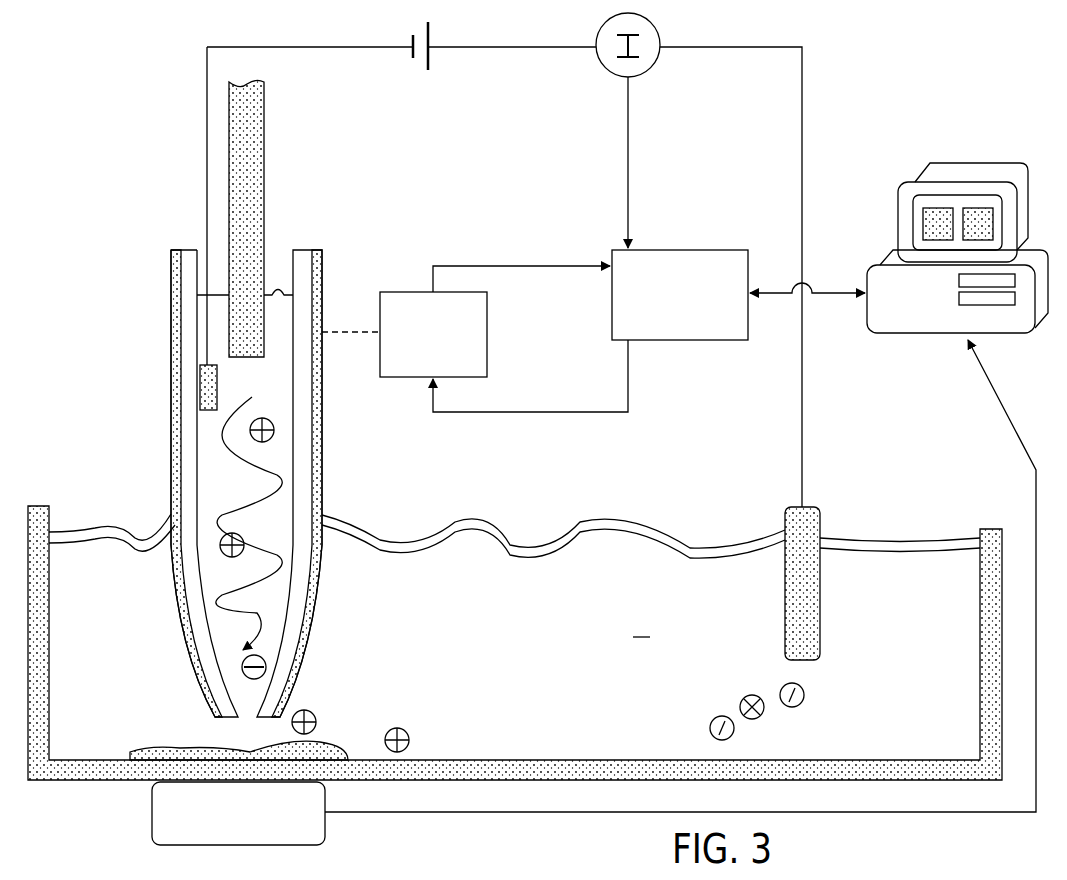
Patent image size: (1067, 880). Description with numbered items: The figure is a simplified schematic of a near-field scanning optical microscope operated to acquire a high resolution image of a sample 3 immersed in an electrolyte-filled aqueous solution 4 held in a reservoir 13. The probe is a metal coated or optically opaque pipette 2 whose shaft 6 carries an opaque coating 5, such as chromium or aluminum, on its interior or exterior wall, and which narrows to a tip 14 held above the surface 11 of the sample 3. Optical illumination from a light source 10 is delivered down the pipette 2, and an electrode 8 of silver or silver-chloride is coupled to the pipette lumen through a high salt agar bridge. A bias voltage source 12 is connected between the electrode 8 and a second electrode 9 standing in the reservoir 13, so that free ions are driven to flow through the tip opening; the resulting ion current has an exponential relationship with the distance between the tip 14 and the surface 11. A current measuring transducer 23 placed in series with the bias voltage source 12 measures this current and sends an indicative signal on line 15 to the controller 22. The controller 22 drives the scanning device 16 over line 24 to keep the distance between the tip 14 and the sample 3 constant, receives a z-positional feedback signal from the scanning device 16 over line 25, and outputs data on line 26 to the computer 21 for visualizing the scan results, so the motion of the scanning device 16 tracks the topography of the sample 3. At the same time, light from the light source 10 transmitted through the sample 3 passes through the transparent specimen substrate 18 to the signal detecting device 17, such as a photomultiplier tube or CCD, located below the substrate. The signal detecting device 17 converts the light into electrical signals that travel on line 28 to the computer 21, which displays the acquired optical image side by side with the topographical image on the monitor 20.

The pipette 2 is at (171, 380).
The sample 3 is at (146, 748).
The aqueous solution 4 is at (514, 633).
The opaque coating 5 is at (171, 464).
The shaft 6 is at (290, 270).
The electrode 8 is at (218, 396).
The second electrode 9 is at (821, 605).
The light source 10 is at (265, 198).
The surface 11 is at (322, 742).
The bias voltage source 12 is at (430, 32).
The reservoir 13 is at (990, 528).
The tip 14 is at (247, 730).
The line 15 is at (630, 152).
The scanning device 16 is at (405, 291).
The signal detecting device 17 is at (152, 812).
The transparent specimen substrate 18 is at (350, 758).
The monitor 20 is at (897, 206).
The computer 21 is at (888, 334).
The controller 22 is at (684, 249).
The current measuring transducer 23 is at (603, 68).
The line 24 is at (568, 413).
The line 25 is at (537, 265).
The line 26 is at (786, 294).
The line 28 is at (346, 813).